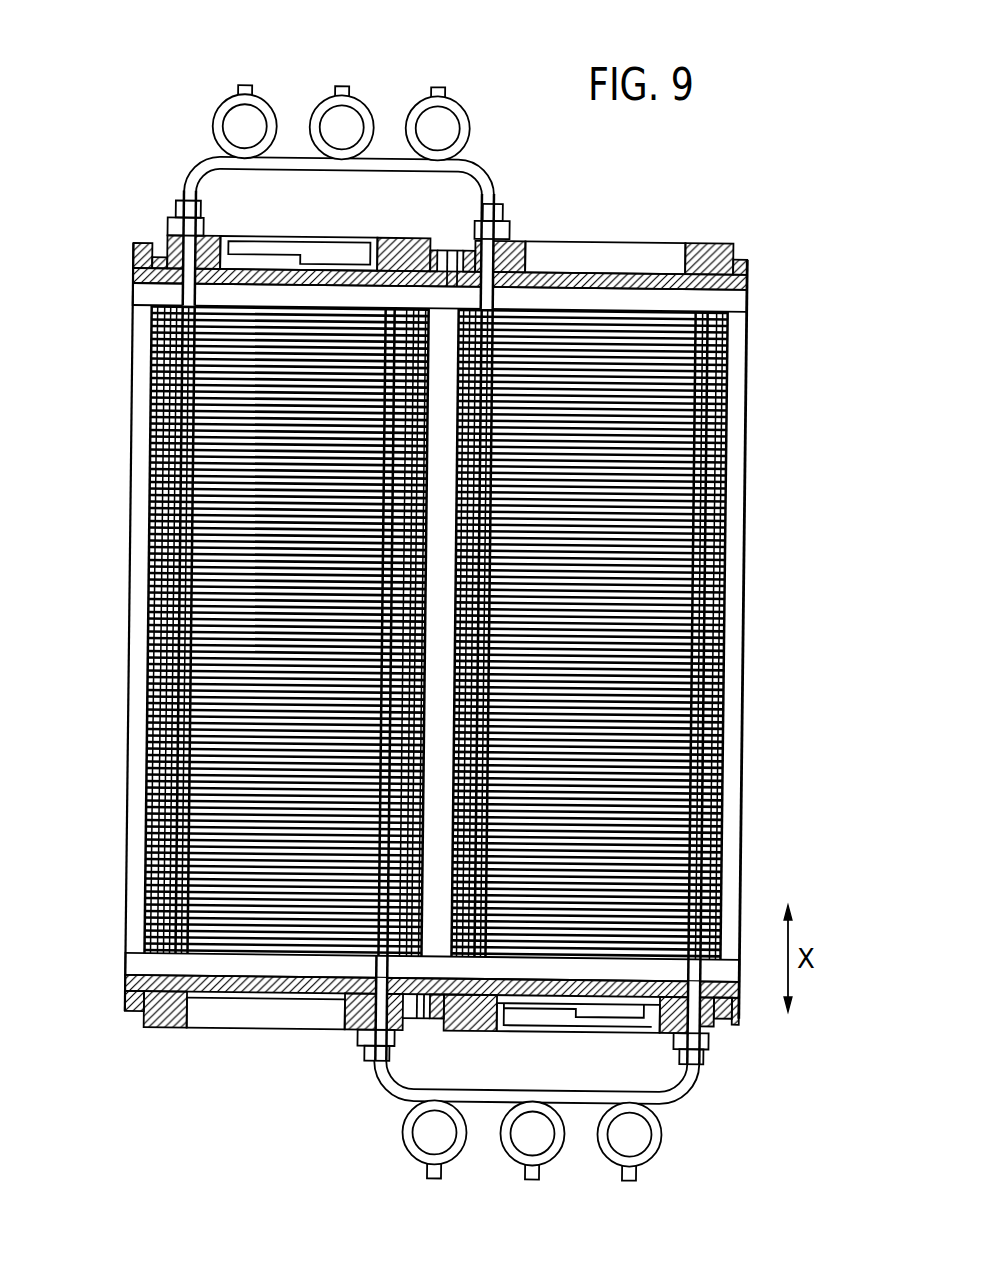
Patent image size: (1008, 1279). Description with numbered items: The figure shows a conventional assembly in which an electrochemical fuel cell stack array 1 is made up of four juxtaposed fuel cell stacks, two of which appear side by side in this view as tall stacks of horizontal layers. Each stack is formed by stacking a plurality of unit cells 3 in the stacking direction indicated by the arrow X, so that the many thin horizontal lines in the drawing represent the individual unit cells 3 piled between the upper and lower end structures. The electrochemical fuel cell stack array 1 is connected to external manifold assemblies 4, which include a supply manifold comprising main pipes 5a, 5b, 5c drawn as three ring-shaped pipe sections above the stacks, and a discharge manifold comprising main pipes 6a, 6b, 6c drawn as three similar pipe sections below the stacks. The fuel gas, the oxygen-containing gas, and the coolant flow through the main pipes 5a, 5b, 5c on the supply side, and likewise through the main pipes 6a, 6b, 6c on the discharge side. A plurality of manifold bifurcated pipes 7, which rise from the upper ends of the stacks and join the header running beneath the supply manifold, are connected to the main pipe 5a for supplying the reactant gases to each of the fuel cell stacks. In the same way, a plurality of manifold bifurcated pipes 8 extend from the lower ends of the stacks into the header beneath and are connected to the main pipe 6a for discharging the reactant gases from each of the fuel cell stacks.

The electrochemical fuel cell stack array 1 is at (613, 181).
The unit cell 3 is at (690, 437).
The external manifold assembly 4 is at (358, 60).
The main pipe 5a is at (224, 104).
The main pipe 5b is at (321, 104).
The main pipe 5c is at (416, 104).
The main pipe 6a is at (653, 1156).
The main pipe 6b is at (556, 1156).
The main pipe 6c is at (458, 1156).
The manifold bifurcated pipe 7 is at (188, 184).
The manifold bifurcated pipe 8 is at (375, 1070).